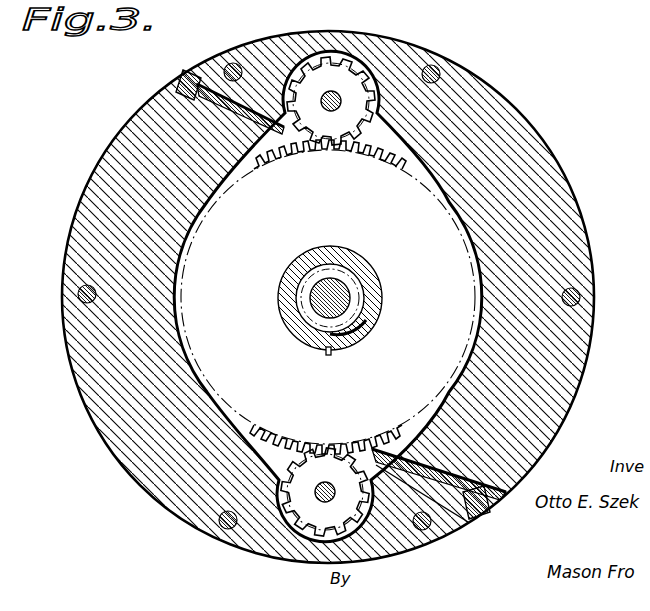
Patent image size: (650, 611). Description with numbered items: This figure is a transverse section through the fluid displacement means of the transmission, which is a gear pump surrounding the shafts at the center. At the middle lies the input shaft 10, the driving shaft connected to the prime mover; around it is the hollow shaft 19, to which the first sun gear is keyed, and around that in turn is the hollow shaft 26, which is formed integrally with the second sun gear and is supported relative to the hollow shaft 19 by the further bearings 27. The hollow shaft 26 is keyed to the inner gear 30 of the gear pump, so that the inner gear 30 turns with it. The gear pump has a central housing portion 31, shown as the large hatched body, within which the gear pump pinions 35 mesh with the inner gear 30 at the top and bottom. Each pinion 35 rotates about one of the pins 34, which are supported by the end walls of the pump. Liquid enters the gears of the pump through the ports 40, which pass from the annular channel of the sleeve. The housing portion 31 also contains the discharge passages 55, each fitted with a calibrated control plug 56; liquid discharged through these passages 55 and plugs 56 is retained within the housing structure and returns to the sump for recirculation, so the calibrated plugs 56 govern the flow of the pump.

The input shaft 10 is at (343, 297).
The hollow shaft 19 is at (313, 278).
The hollow shaft 26 is at (372, 317).
The bearings 27 is at (342, 283).
The inner gear 30 is at (328, 297).
The central housing portion 31 is at (570, 232).
The pins 34 is at (344, 100).
The gear pump pinions 35 is at (343, 78).
The ports 40 is at (357, 157).
The discharge passages 55 is at (213, 100).
The calibrated control plugs 56 is at (183, 72).